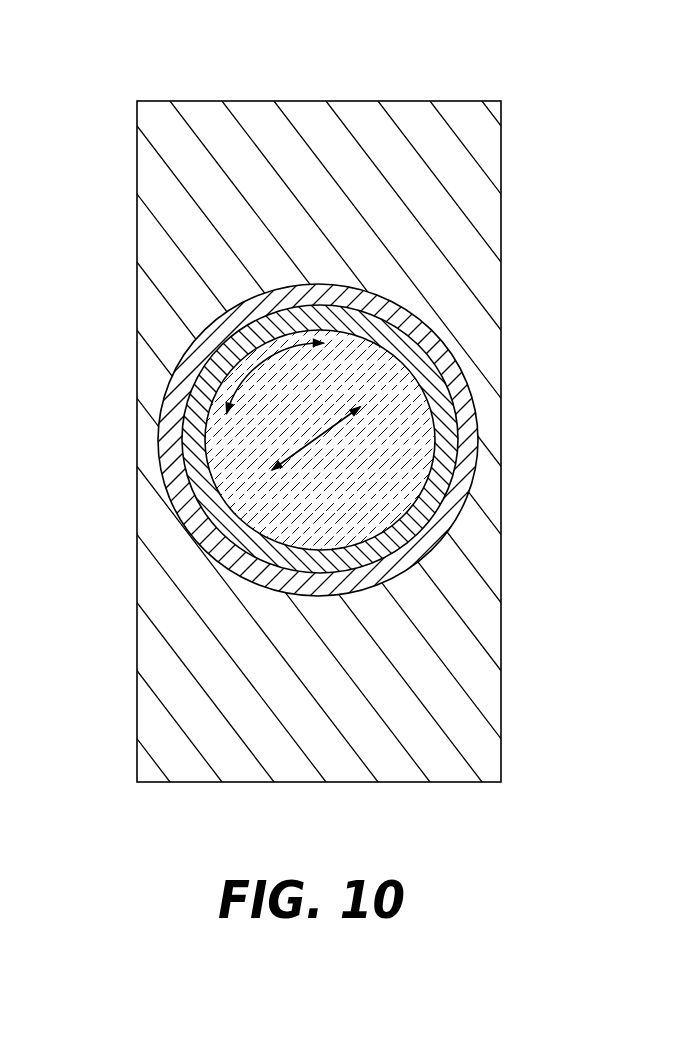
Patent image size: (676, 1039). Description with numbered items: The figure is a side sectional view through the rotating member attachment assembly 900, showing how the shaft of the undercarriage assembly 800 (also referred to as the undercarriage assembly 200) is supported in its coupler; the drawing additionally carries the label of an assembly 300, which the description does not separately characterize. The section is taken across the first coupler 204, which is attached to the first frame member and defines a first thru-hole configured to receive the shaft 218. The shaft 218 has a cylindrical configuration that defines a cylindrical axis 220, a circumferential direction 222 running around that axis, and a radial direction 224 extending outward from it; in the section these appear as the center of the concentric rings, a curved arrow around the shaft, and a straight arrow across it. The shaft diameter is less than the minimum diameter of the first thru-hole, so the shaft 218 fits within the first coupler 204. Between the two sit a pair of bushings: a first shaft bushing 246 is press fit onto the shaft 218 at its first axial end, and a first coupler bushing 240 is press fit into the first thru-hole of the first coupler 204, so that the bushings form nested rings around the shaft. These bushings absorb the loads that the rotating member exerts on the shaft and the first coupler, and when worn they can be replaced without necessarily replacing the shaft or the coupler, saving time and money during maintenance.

The assembly 900 is at (108, 130).
The undercarriage assembly 800 is at (186, 92).
The undercarriage assembly 200 is at (326, 61).
The backing plate 300 is at (439, 60).
The first coupler 204 is at (557, 273).
The first coupler bushing 240 is at (478, 430).
The first shaft bushing 246 is at (437, 398).
The shaft 218 is at (338, 450).
The circumferential direction 222 is at (340, 376).
The cylindrical axis 220 is at (363, 463).
The radial direction 224 is at (299, 450).